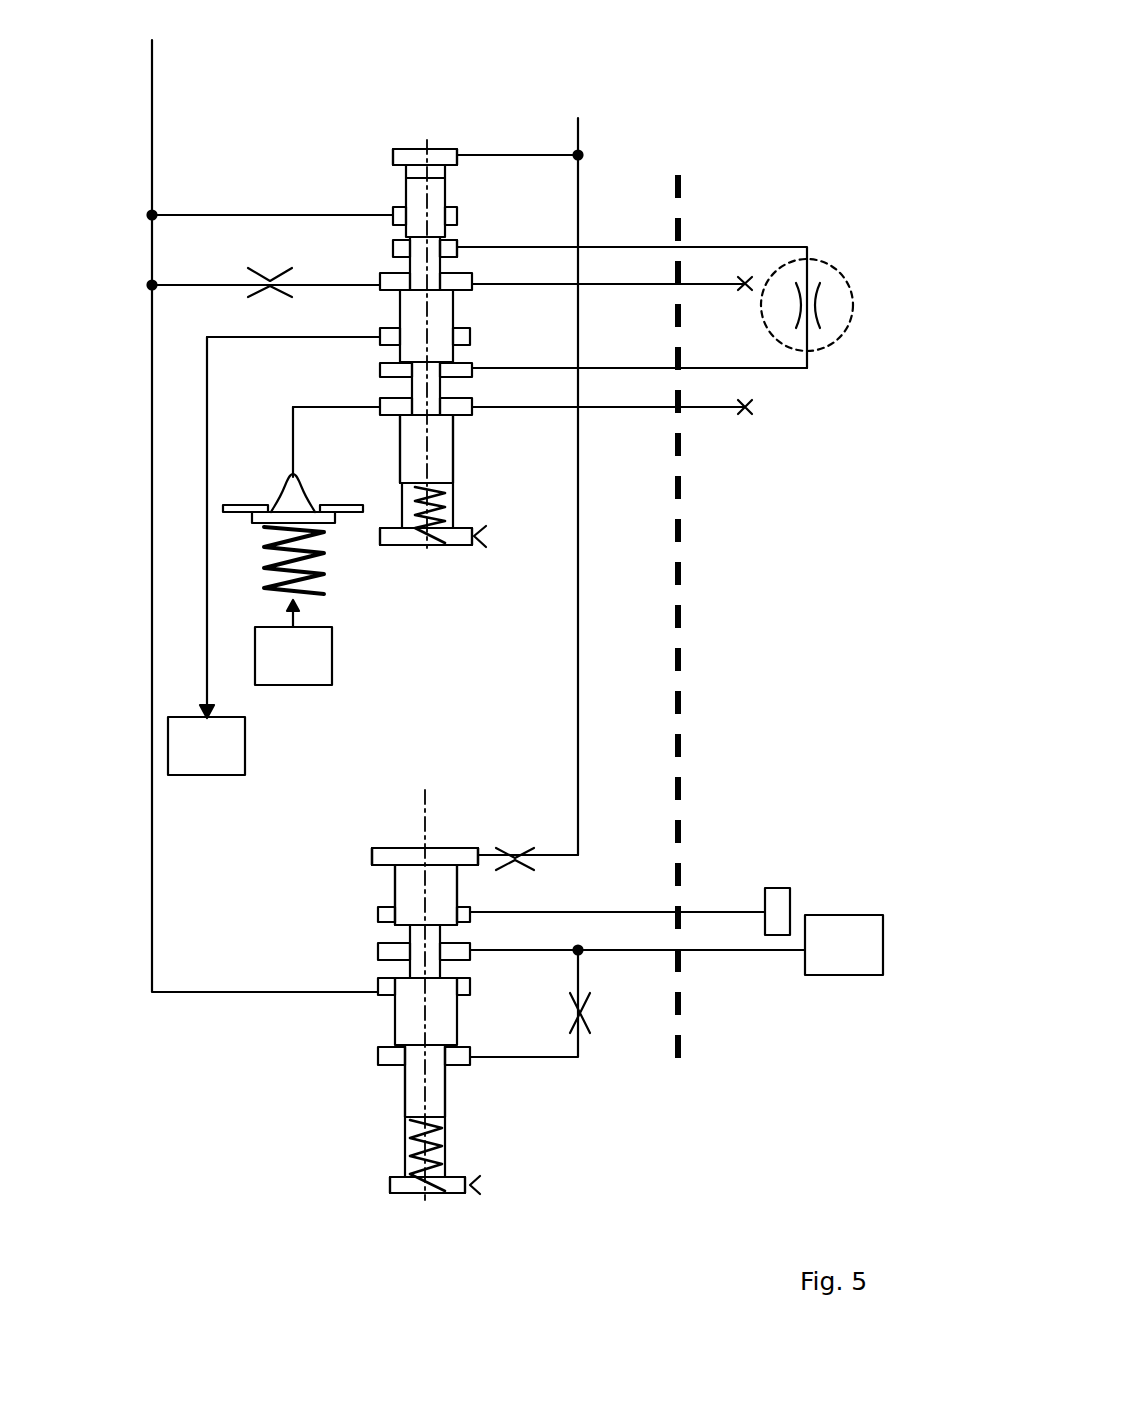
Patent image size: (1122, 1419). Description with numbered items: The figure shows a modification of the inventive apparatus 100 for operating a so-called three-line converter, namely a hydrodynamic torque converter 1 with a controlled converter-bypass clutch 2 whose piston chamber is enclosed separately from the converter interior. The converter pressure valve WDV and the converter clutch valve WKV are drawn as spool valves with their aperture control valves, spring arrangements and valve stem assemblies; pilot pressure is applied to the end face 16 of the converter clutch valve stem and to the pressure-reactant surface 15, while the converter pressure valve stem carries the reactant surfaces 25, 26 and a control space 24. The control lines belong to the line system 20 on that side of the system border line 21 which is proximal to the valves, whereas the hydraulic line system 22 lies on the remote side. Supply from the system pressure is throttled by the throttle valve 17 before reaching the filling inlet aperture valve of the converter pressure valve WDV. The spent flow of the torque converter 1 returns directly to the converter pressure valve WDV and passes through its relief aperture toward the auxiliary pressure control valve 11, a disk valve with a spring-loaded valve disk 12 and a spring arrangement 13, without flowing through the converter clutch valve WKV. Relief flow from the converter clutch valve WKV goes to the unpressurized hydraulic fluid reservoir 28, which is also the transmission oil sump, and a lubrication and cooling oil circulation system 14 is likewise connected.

The inventive apparatus 100 is at (153, 1060).
The hydrodynamic torque converter 1 is at (865, 318).
The controlled converter-bypass clutch 2 is at (848, 985).
The auxiliary pressure control valve 11 is at (266, 480).
The valve disk 12 is at (272, 518).
The spring arrangement of pressure control valve 13 is at (286, 598).
The lubrication and cooling oil circulation system 14 is at (182, 762).
The pressure-reactant surface 15 is at (455, 1075).
The end face of valve stem assembly of the converter clutch valve 16 is at (440, 852).
The throttle valve 17 is at (243, 302).
The line system 20 is at (622, 1052).
The system border line 21 is at (687, 1047).
The hydraulic line system 22 is at (785, 960).
The control space 24 is at (443, 268).
The reactant surface of the valve stem assembly of the converter pressure valve 25 is at (458, 249).
The reactant surface of the valve stem assembly of the converter pressure valve 26 is at (390, 292).
The hydraulic fluid reservoir 28 is at (303, 662).
The converter pressure valve WDV is at (448, 138).
The converter clutch valve WKV is at (410, 1203).